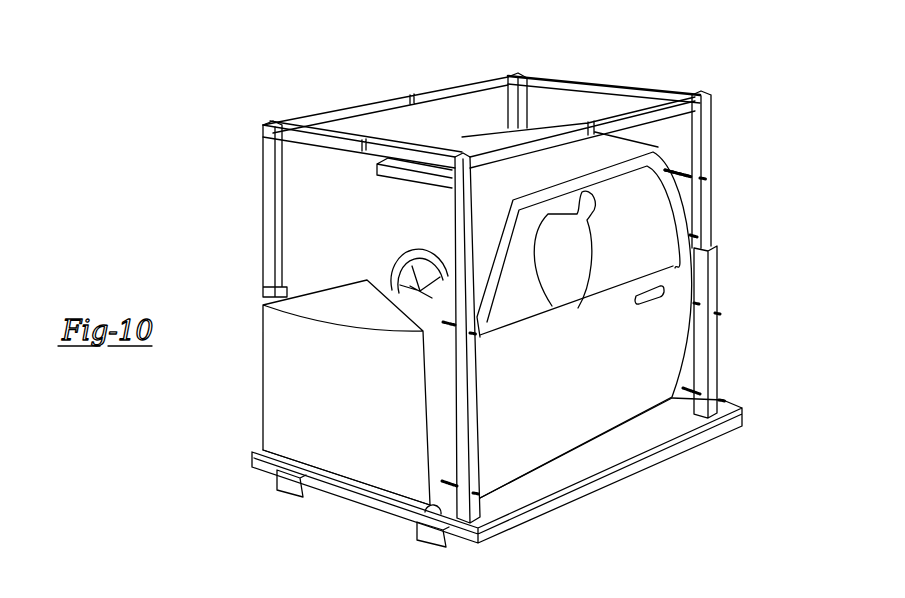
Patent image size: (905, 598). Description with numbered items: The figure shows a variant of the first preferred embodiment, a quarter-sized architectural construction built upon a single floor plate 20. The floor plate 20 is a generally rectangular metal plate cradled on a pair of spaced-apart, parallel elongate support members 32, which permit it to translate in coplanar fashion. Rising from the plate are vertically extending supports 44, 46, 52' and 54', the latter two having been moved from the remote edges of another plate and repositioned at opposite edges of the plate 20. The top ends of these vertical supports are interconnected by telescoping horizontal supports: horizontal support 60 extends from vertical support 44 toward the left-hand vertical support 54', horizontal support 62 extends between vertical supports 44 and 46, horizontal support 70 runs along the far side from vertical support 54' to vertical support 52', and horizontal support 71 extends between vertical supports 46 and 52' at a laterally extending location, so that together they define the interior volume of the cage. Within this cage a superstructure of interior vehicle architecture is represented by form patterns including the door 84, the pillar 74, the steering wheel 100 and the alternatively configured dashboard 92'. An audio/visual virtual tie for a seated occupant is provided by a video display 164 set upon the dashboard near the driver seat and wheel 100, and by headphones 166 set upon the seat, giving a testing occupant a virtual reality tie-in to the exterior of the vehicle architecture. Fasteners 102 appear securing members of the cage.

The floor plate 20 is at (362, 507).
The elongate support members 32 is at (285, 485).
The vertically extending support 44 is at (480, 388).
The vertically extending support 46 is at (718, 293).
The vertically extending support 52' is at (463, 93).
The vertically extending support 54' is at (222, 209).
The horizontal support 60 is at (325, 158).
The horizontal support 62 is at (497, 175).
The horizontal support 70 is at (360, 101).
The horizontal support 71 is at (570, 72).
The pillar 74 is at (589, 249).
The door 84 is at (599, 378).
The alternatively configured dashboard 92' is at (314, 397).
The steering wheel 100 is at (440, 262).
The fastener 102 is at (678, 173).
The video display 164 is at (332, 265).
The headphones 166 is at (572, 228).